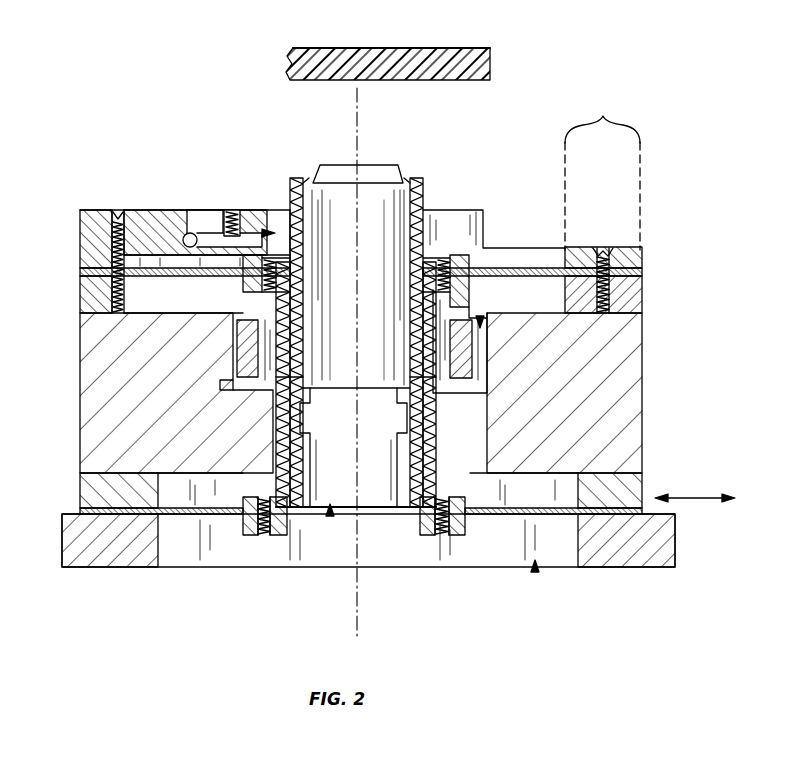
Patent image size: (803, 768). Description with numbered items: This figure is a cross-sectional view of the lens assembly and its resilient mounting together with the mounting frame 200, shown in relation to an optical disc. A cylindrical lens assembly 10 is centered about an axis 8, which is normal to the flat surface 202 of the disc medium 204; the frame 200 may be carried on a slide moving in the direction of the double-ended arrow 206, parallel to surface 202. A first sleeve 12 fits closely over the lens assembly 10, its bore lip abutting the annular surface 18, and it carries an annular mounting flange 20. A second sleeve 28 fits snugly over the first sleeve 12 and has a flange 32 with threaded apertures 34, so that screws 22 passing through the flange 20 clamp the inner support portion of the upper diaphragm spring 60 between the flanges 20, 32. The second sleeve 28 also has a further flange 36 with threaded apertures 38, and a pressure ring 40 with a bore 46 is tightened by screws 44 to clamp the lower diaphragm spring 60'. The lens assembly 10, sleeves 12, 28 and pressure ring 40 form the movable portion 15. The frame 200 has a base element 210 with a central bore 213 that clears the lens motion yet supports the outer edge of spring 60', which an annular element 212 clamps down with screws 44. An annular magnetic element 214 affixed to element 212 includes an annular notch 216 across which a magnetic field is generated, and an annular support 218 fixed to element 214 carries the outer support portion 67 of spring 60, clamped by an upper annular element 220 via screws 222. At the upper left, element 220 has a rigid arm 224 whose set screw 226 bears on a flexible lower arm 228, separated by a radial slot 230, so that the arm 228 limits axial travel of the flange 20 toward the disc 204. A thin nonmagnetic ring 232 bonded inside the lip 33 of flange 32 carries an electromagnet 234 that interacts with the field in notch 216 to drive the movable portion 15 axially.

The axis 8 is at (362, 120).
The lens assembly 10 is at (395, 212).
The first sleeve 12 is at (430, 210).
The movable portion 15 is at (382, 339).
The annular surface 18 is at (382, 185).
The mounting flange 20 is at (452, 275).
The screws 22 is at (455, 265).
The second sleeve 28 is at (402, 500).
The flange 32 is at (250, 290).
The overhanging lip 33 is at (250, 318).
The threaded apertures 34 is at (510, 270).
The further flange 36 is at (210, 516).
The threaded apertures 38 is at (483, 515).
The pressure ring 40 is at (248, 520).
The screws 44 is at (436, 520).
The bore 46 is at (330, 520).
The upper diaphragm spring 60 is at (360, 225).
The lower diaphragm spring 60' is at (325, 555).
The outer support portion 67 is at (602, 170).
The frame 200 is at (378, 324).
The flat surface 202 is at (460, 80).
The optical disc medium 204 is at (455, 47).
The double-ended arrow 206 is at (698, 505).
The base element 210 is at (640, 568).
The annular element 212 is at (80, 497).
The central bore 213 is at (538, 578).
The annular magnetic element 214 is at (82, 445).
The annular notch 216 is at (482, 316).
The annular support 218 is at (82, 285).
The upper annular element 220 is at (642, 260).
The screw 222 is at (608, 250).
The rigid arm 224 is at (178, 215).
The set screw 226 is at (230, 213).
The flexible lower arm 228 is at (202, 232).
The radial slot 230 is at (268, 228).
The nonmagnetic ring 232 is at (230, 388).
The electromagnet 234 is at (238, 350).